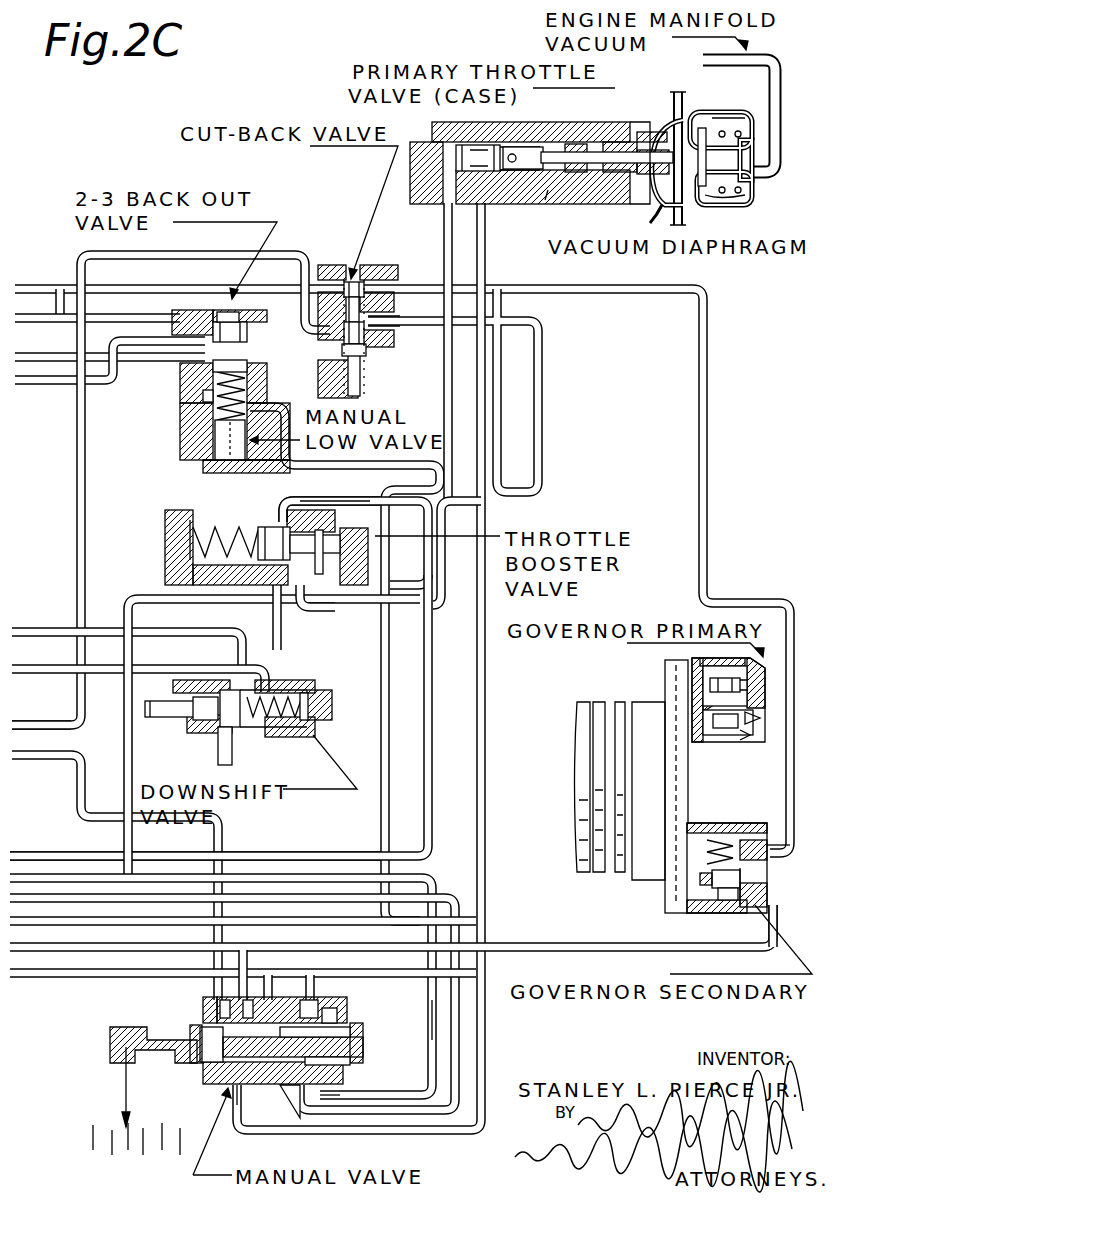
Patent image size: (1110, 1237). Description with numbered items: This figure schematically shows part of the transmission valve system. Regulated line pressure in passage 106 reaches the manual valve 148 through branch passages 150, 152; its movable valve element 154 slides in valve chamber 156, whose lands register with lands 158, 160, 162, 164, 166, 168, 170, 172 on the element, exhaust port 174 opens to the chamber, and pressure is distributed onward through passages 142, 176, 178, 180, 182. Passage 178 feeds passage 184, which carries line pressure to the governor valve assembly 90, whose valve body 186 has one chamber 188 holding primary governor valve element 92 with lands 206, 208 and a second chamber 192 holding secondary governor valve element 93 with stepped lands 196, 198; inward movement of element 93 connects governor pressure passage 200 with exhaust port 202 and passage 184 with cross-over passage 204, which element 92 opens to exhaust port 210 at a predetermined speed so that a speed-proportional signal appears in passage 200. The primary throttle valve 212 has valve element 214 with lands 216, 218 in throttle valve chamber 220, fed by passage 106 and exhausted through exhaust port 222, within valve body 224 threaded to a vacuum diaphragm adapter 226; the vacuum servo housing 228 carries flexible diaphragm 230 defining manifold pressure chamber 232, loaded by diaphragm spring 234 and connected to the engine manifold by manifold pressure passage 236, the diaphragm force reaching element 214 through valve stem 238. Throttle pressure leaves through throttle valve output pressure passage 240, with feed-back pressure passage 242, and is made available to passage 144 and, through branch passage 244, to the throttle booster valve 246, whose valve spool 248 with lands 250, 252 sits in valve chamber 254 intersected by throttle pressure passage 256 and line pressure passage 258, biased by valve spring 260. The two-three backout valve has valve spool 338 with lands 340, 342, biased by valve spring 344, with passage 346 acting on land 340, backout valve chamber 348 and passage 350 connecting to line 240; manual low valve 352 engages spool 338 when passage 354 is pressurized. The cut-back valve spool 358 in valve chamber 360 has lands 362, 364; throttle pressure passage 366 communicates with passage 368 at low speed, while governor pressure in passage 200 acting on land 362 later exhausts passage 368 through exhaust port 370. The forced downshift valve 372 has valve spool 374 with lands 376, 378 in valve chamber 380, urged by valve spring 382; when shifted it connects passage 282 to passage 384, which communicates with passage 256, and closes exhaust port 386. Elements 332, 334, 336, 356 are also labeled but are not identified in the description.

The governor valve assembly 90 is at (762, 729).
The primary governor valve element 92 is at (767, 705).
The secondary governor valve element 93 is at (762, 878).
The passage 106 is at (475, 240).
The passage 142 is at (175, 873).
The passage 144 is at (434, 667).
The manual valve 148 is at (275, 992).
The branch passage 150 is at (436, 1035).
The branch passage 152 is at (355, 1010).
The movable valve element 154 is at (287, 1122).
The valve chamber 156 is at (205, 1060).
The valve land 158 is at (350, 1062).
The valve land 160 is at (343, 1078).
The valve land 162 is at (232, 1118).
The valve land 164 is at (125, 1062).
The valve land 166 is at (130, 1028).
The valve land 168 is at (192, 1025).
The valve land 170 is at (315, 975).
The valve land 172 is at (350, 1028).
The exhaust port 174 is at (330, 1112).
The passage 176 is at (108, 922).
The passage 178 is at (250, 967).
The passage 180 is at (55, 978).
The passage 182 is at (30, 758).
The passage 184 is at (20, 990).
The valve body 186 is at (772, 850).
The valve chamber 188 is at (767, 715).
The valve chamber 192 is at (770, 892).
The valve land 196 is at (700, 865).
The valve land 198 is at (715, 912).
The governor pressure passage 200 is at (50, 283).
The exhaust port 202 is at (715, 828).
The cross-over passage 204 is at (670, 885).
The valve land 206 is at (692, 698).
The valve land 208 is at (708, 745).
The exhaust port 210 is at (703, 678).
The primary throttle valve 212 is at (600, 170).
The valve element 214 is at (515, 147).
The valve land 216 is at (435, 125).
The valve land 218 is at (568, 142).
The throttle valve chamber 220 is at (470, 145).
The exhaust port 222 is at (545, 200).
The valve body 224 is at (595, 127).
The vacuum diaphragm adapter 226 is at (676, 95).
The vacuum servo housing 228 is at (647, 220).
The flexible diaphragm 230 is at (750, 112).
The manifold pressure chamber 232 is at (752, 190).
The diaphragm spring 234 is at (752, 120).
The manifold pressure passage 236 is at (757, 142).
The valve stem 238 is at (548, 200).
The throttle valve output pressure passage 240 is at (477, 250).
The feed-back pressure passage 242 is at (443, 222).
The branch passage 244 is at (292, 625).
The throttle booster valve 246 is at (255, 575).
The valve spool 248 is at (300, 600).
The valve land 250 is at (292, 492).
The valve land 252 is at (360, 635).
The valve chamber 254 is at (325, 496).
The throttle pressure passage 256 is at (290, 610).
The passage 258 is at (142, 595).
The valve spring 260 is at (230, 525).
The passage 282 is at (55, 625).
The passage 332 is at (36, 376).
The 2-3 back out valve bore 334 is at (318, 270).
The passage 336 is at (60, 354).
The valve spool 338 is at (170, 313).
The valve land 340 is at (225, 262).
The valve land 342 is at (200, 375).
The valve spring 344 is at (203, 397).
The passage 346 is at (62, 275).
The backout valve chamber 348 is at (250, 385).
The passage 350 is at (205, 465).
The manual low valve 352 is at (208, 440).
The passage 354 is at (392, 493).
The cut-back valve land 356 is at (358, 308).
The valve spool 358 is at (365, 325).
The valve chamber 360 is at (340, 335).
The valve land 362 is at (344, 300).
The valve land 364 is at (362, 360).
The throttle pressure passage 366 is at (540, 338).
The passage 368 is at (265, 250).
The exhaust port 370 is at (365, 355).
The forced downshift valve 372 is at (235, 745).
The valve spool 374 is at (195, 725).
The valve land 376 is at (195, 700).
The valve land 378 is at (292, 690).
The valve chamber 380 is at (300, 715).
The valve spring 382 is at (305, 697).
The passage 384 is at (60, 666).
The exhaust port 386 is at (218, 750).